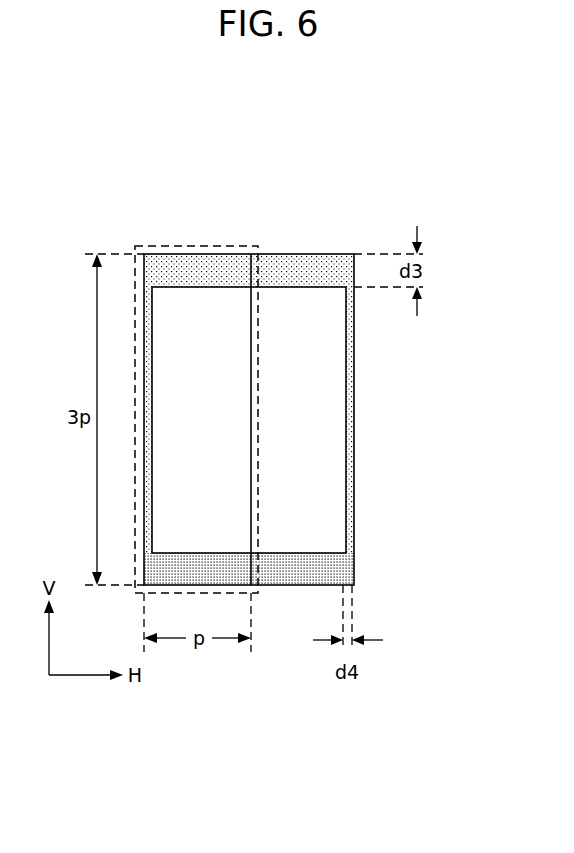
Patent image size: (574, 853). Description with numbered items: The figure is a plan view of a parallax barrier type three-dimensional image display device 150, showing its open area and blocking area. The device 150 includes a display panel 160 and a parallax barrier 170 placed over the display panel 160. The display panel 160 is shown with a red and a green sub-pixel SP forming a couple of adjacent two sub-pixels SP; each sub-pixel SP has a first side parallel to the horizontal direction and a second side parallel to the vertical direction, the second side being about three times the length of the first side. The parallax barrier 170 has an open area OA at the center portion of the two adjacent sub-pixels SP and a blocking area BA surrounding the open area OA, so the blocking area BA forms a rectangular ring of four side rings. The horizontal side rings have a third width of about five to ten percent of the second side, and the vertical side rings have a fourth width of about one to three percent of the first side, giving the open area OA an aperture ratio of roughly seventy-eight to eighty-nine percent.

The three-dimensional image display device 150 is at (324, 353).
The display panel 160 is at (200, 331).
The parallax barrier 170 is at (324, 419).
The sub-pixel SP is at (198, 244).
The blocking area BA is at (322, 273).
The open area OA is at (326, 381).